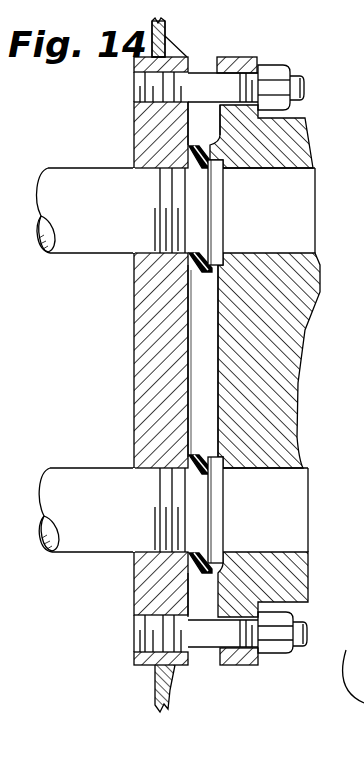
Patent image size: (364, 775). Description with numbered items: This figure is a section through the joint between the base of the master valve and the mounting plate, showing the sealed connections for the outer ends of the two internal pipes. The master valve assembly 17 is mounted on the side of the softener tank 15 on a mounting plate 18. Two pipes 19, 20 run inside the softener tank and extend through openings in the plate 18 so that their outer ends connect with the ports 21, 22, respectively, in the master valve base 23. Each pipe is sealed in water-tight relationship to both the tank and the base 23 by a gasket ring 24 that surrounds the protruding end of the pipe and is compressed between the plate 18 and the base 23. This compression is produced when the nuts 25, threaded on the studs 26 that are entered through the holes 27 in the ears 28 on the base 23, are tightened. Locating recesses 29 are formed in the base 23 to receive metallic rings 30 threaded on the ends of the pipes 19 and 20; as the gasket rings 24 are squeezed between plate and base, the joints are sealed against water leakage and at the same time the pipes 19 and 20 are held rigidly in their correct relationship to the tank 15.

The softener tank 15 is at (166, 20).
The master valve assembly 17 is at (265, 668).
The mounting plate 18 is at (144, 341).
The pipe 19 is at (83, 243).
The pipe 20 is at (83, 470).
The port 21 is at (313, 212).
The port 22 is at (297, 511).
The master valve base 23 is at (301, 382).
The gasket rings 24 is at (198, 282).
The nuts 25 is at (282, 65).
The studs 26 is at (306, 88).
The holes 27 is at (213, 67).
The ears 28 is at (250, 57).
The locating recesses 29 is at (233, 254).
The metallic rings 30 is at (224, 207).